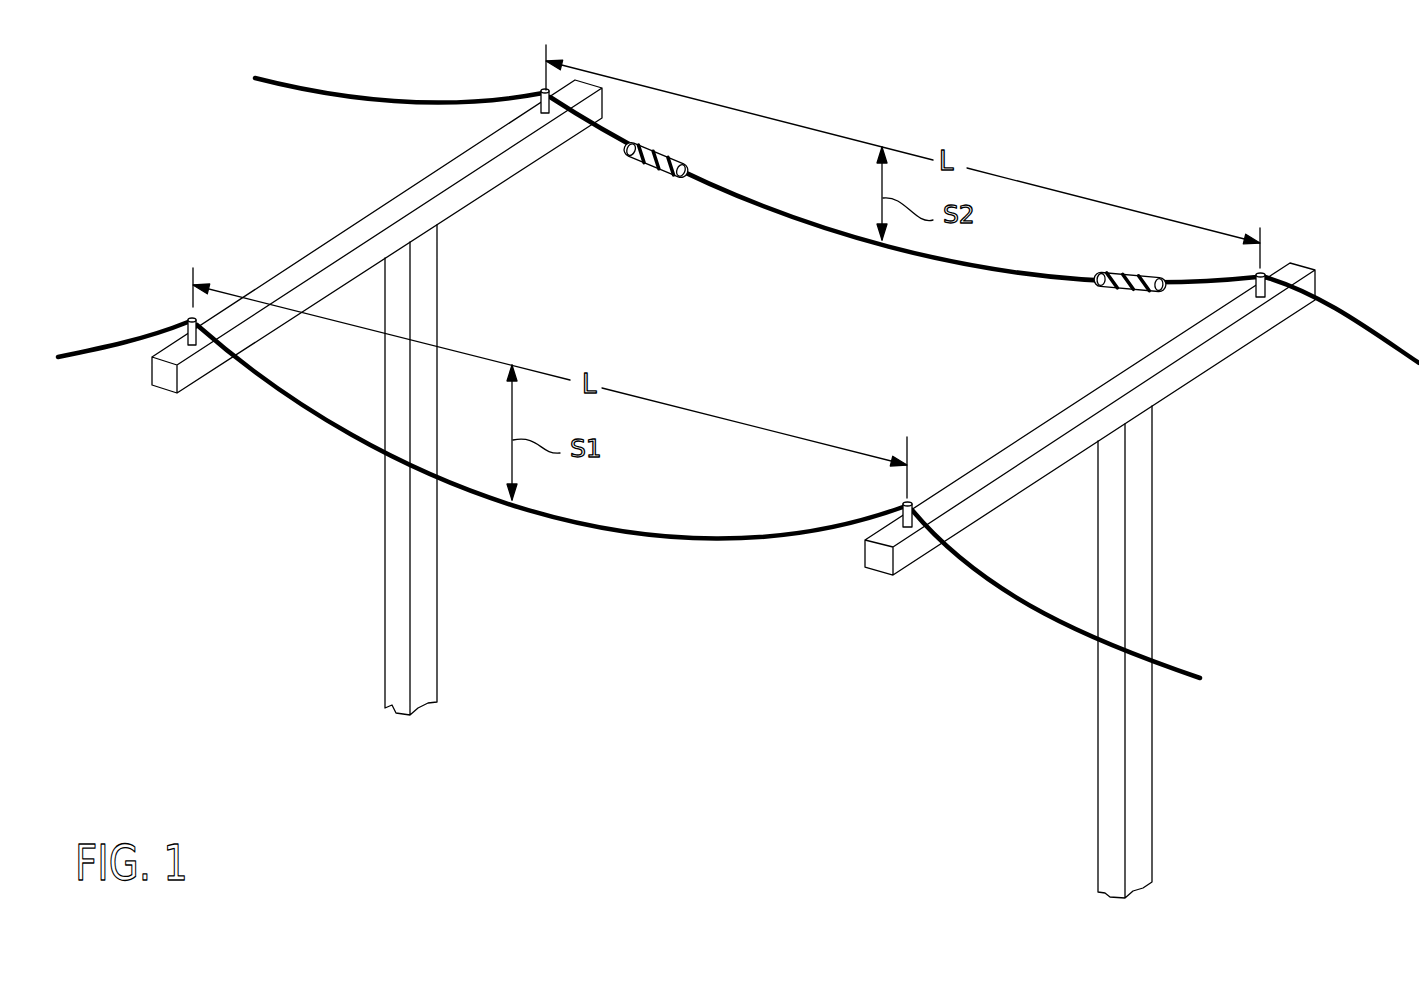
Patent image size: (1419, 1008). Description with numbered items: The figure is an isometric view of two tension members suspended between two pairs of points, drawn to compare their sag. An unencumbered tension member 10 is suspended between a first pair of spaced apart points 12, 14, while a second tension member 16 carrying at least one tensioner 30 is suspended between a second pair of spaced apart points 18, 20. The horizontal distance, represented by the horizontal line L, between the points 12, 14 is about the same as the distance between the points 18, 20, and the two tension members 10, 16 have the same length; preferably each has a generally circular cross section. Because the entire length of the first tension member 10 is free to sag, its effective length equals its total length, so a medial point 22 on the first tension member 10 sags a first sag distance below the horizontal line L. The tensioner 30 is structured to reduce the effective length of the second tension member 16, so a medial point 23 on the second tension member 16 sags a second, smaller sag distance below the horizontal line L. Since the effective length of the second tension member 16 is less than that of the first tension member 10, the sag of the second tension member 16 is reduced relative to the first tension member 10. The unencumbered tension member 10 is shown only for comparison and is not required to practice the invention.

The tension member 10 is at (730, 541).
The spaced apart point 12 is at (195, 347).
The spaced apart point 14 is at (911, 528).
The tension member 16 is at (830, 231).
The spaced apart point 18 is at (550, 114).
The spaced apart point 20 is at (1264, 298).
The medial point 22 is at (515, 505).
The medial point 23 is at (888, 241).
The tensioner 30 is at (672, 178).